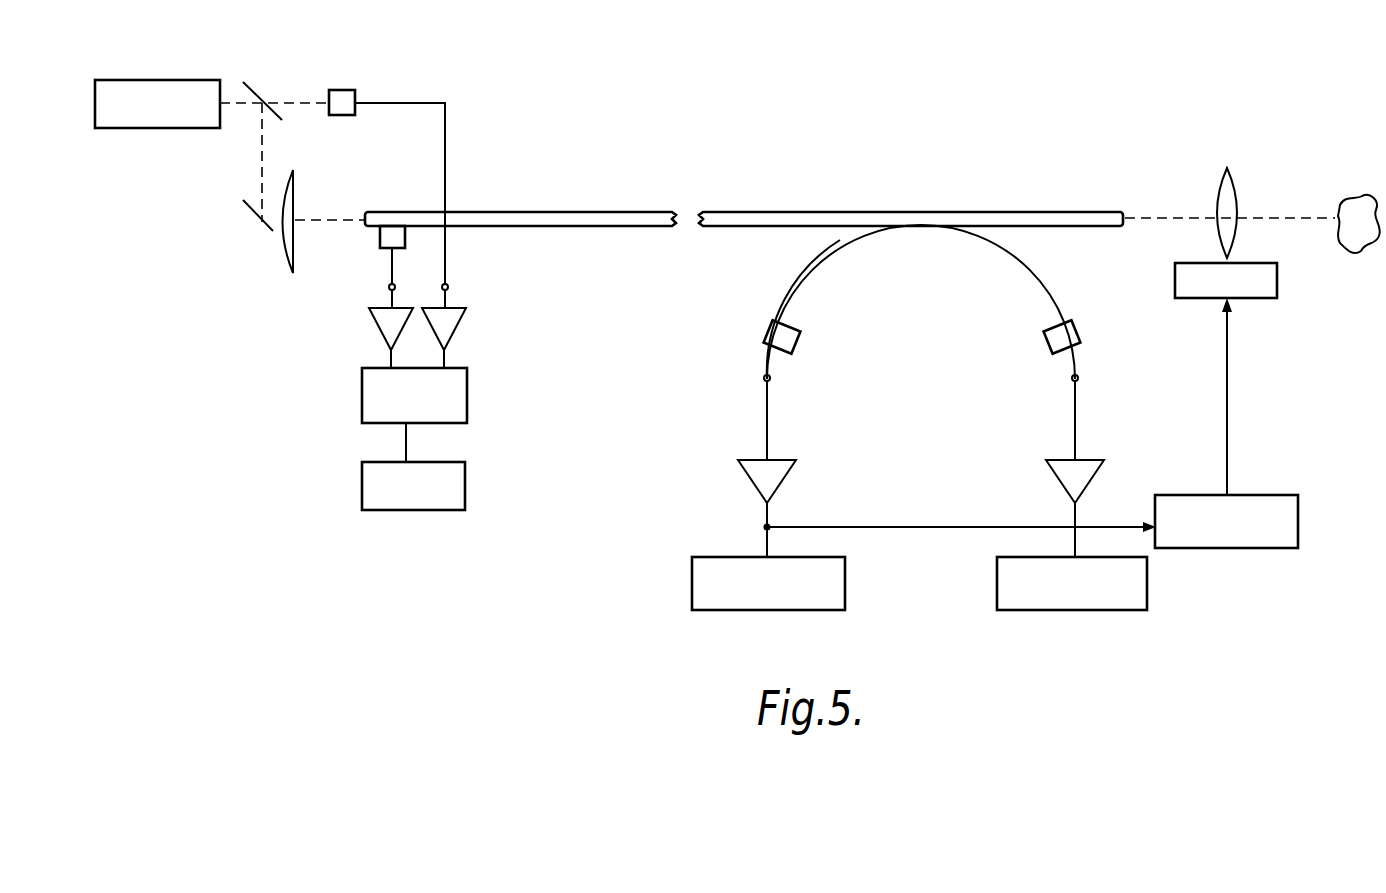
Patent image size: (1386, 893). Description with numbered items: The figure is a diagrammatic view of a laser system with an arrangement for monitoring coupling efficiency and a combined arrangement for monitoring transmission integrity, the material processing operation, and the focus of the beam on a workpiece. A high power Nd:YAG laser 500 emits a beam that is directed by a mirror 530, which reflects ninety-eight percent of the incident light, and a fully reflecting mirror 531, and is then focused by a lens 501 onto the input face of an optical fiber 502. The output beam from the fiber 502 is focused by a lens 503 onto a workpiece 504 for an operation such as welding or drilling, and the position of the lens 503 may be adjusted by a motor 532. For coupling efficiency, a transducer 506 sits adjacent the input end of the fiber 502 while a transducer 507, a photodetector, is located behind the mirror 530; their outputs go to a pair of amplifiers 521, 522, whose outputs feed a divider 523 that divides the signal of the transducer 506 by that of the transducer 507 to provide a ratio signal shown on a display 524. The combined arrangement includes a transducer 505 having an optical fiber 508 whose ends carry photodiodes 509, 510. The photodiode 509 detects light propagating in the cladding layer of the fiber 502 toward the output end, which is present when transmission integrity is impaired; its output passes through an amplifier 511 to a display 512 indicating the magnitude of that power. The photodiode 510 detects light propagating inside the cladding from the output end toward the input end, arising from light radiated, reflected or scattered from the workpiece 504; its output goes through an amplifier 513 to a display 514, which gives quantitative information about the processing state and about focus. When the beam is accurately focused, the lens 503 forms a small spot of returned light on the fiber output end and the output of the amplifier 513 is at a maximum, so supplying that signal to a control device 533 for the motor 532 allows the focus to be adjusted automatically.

The laser 500 is at (128, 118).
The lens 501 is at (288, 252).
The optical fiber 502 is at (605, 228).
The lens 503 is at (1232, 185).
The workpiece 504 is at (1362, 237).
The transducer 505 is at (955, 281).
The transducer 506 is at (382, 236).
The transducer 507 is at (340, 95).
The optical fiber 508 is at (805, 287).
The photodiode 509 is at (1052, 340).
The photodiode 510 is at (788, 342).
The amplifier 511 is at (1060, 472).
The display 512 is at (1088, 595).
The amplifier 513 is at (770, 480).
The display 514 is at (792, 595).
The amplifier 521 is at (380, 320).
The amplifier 522 is at (455, 318).
The divider 523 is at (462, 393).
The display 524 is at (462, 486).
The mirror 530 is at (255, 92).
The mirror 531 is at (250, 207).
The motor 532 is at (1247, 285).
The control device 533 is at (1283, 520).